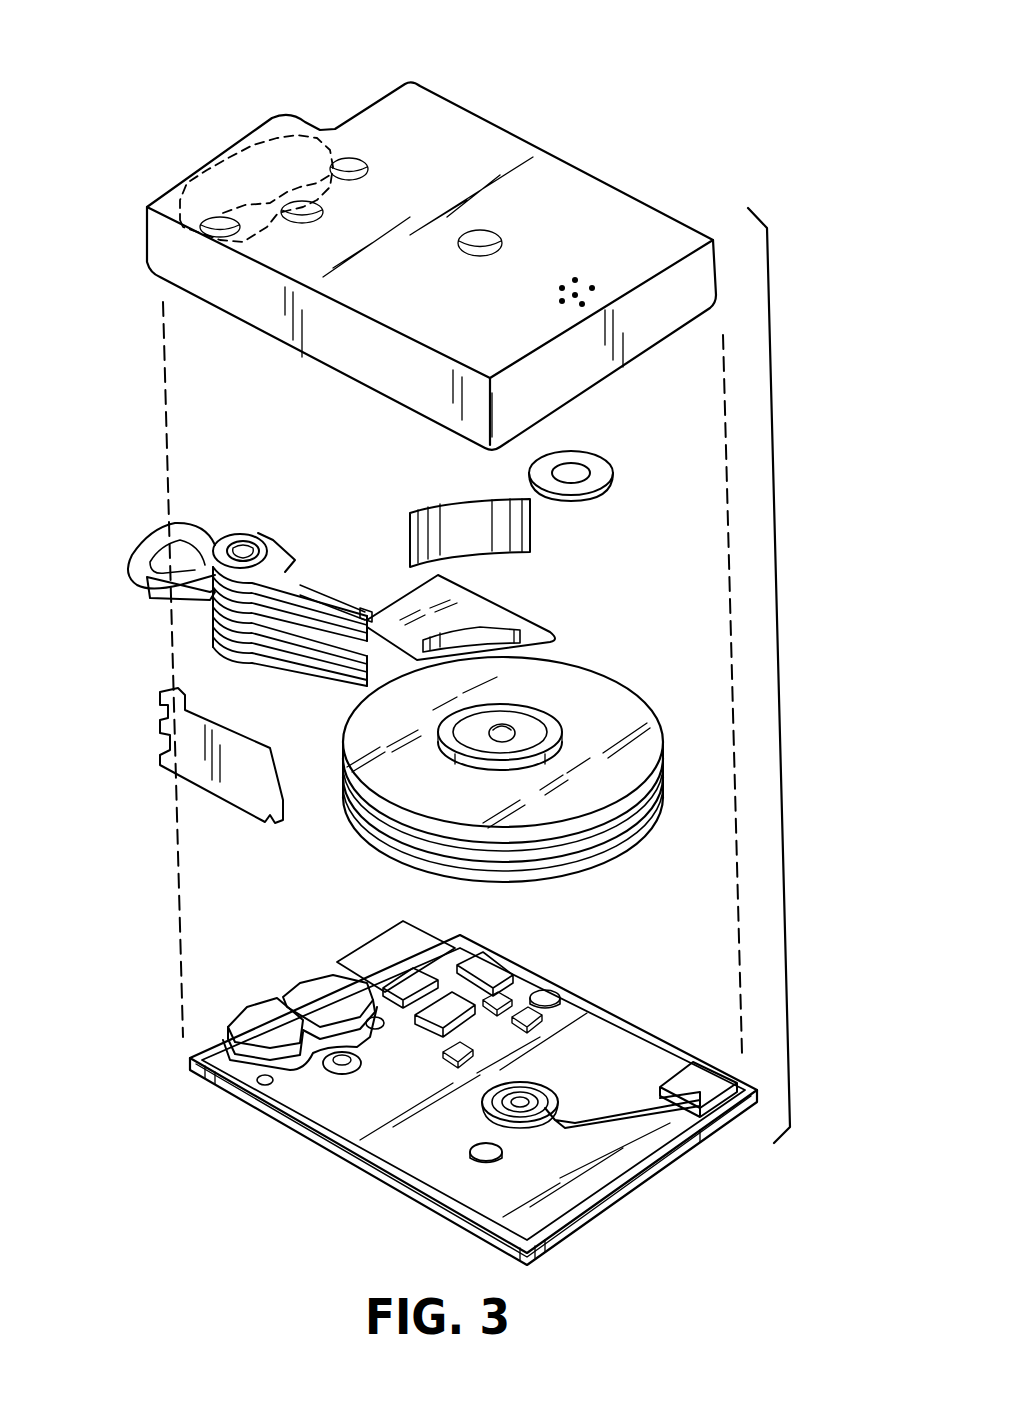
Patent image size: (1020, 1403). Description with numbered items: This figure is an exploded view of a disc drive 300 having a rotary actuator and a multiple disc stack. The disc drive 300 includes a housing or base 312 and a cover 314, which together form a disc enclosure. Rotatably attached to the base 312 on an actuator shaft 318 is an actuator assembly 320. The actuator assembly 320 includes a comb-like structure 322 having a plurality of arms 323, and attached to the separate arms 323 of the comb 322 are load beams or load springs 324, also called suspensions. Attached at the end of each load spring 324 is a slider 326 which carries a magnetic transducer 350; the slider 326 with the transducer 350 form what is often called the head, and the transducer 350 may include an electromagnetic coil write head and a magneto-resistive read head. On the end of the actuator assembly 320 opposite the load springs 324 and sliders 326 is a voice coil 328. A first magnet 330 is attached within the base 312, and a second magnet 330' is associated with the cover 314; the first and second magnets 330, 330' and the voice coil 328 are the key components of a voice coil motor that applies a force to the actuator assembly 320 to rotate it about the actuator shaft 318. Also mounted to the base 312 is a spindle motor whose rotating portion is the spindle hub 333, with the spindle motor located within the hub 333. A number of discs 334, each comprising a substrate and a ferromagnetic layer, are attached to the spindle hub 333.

The disc drive 300 is at (590, 93).
The base 312 is at (643, 1053).
The cover 314 is at (600, 200).
The actuator shaft 318 is at (243, 553).
The actuator assembly 320 is at (183, 608).
The comb-like structure 322 is at (268, 660).
The arms 323 is at (297, 565).
The load springs 324 is at (313, 590).
The slider 326 is at (367, 613).
The voice coil 328 is at (147, 552).
The first magnet 330 is at (251, 168).
The second magnet 330' is at (300, 1008).
The spindle hub 333 is at (503, 730).
The discs 334 is at (630, 707).
The magnetic transducer 350 is at (383, 618).